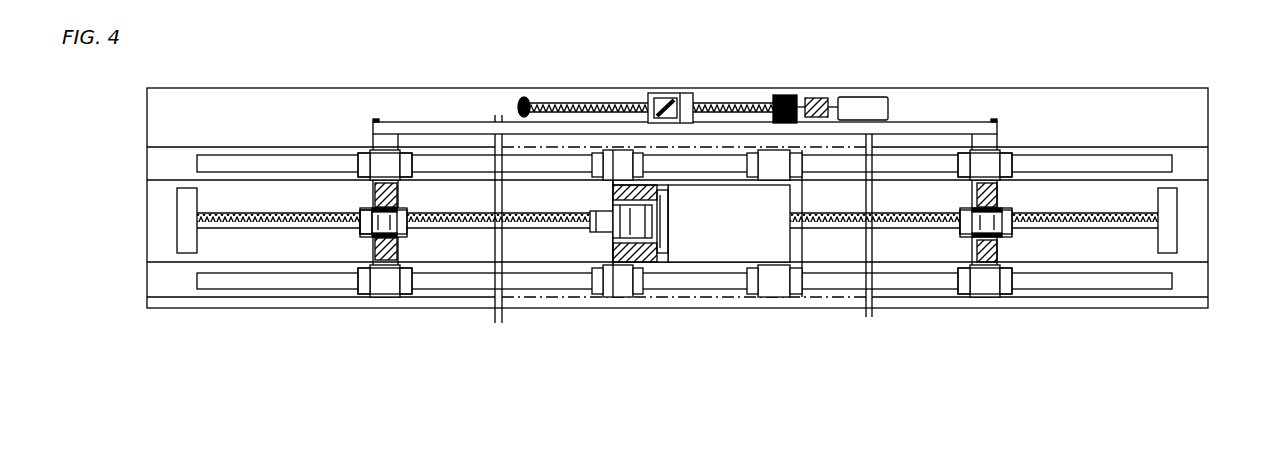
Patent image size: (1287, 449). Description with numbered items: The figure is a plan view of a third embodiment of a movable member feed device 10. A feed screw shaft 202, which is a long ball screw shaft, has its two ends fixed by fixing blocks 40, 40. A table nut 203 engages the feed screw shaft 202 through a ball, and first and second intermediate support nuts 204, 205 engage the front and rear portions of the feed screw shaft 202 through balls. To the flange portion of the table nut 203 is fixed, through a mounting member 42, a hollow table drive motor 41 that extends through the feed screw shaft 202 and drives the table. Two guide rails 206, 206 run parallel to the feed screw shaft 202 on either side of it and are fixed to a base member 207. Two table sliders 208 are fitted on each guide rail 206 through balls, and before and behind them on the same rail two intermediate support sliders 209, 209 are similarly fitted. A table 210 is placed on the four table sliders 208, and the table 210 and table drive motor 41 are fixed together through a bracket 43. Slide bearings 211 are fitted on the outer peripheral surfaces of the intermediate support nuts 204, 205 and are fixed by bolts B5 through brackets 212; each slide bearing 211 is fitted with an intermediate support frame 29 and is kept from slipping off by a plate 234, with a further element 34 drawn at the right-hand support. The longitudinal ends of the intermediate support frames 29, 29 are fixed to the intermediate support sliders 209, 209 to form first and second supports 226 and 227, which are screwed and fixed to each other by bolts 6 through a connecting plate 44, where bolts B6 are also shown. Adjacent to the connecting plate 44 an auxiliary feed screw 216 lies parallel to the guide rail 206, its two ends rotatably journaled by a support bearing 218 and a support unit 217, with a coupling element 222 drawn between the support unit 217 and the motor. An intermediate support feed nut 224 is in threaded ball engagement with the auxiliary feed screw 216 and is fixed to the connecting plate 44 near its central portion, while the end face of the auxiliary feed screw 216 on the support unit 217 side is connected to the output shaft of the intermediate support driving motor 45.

The bolts 6 is at (1094, 6).
The positioning unit 10 is at (795, 13).
The intermediate support frame 29 is at (380, 297).
The bearing 34 is at (995, 195).
The fixing block 40 is at (185, 253).
The table drive motor 41 is at (730, 250).
The mounting member 42 is at (635, 262).
The bracket 43 is at (660, 250).
The connecting plate 44 is at (430, 122).
The intermediate support driving motor 45 is at (862, 97).
The feed screw shaft 202 is at (268, 235).
The table nut 203 is at (600, 255).
The first intermediate support nut 204 is at (388, 220).
The second intermediate support nut 205 is at (1011, 216).
The guide rail 206 is at (1097, 165).
The base member 207 is at (228, 105).
The table slider 208 is at (600, 288).
The intermediate support slider 209 is at (365, 150).
The table 210 is at (702, 298).
The slide bearing 211 is at (992, 171).
The bracket 212 is at (420, 295).
The auxiliary feed screw 216 is at (585, 103).
The support unit 217 is at (783, 95).
The support bearing 218 is at (524, 97).
The spring 222 is at (817, 98).
The intermediate support feed nut 224 is at (663, 95).
The first support 226 is at (357, 239).
The second support 227 is at (1010, 248).
The plate 234 is at (375, 193).
The bolts B5 is at (402, 236).
The bearing B6 is at (377, 122).